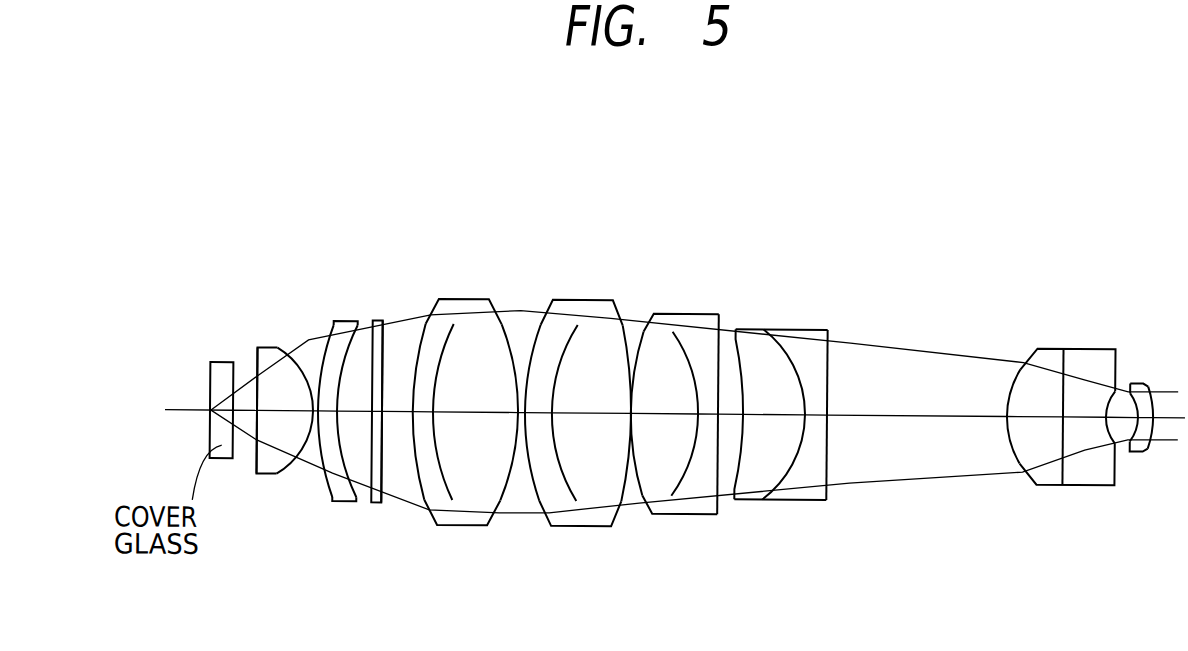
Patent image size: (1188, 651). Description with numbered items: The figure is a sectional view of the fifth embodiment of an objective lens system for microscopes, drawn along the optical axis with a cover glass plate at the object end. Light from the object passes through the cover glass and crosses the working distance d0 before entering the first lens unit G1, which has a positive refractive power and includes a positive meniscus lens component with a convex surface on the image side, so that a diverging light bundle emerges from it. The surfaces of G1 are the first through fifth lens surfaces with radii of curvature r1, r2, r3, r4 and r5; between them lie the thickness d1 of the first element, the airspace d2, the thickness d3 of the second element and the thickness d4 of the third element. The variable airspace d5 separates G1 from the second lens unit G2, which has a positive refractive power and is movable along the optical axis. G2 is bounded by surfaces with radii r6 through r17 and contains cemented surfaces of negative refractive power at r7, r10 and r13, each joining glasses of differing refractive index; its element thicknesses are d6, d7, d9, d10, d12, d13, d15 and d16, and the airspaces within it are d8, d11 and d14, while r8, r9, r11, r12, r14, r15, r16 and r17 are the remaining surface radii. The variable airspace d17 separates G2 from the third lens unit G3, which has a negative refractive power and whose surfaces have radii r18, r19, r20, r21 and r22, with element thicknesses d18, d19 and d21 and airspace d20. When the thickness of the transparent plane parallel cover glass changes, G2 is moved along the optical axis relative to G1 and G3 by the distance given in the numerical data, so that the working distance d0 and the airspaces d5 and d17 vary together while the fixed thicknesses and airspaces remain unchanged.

The first lens unit G1 is at (401, 174).
The second lens unit G2 is at (858, 174).
The third lens unit G3 is at (1180, 173).
The radius of curvature of first lens surface r1 is at (248, 372).
The radius of curvature of second lens surface r2 is at (286, 339).
The radius of curvature of third lens surface r3 is at (316, 319).
The radius of curvature of fourth lens surface r4 is at (355, 319).
The radius of curvature of fifth lens surface r5 is at (390, 318).
The radius of curvature of sixth lens surface r6 is at (422, 320).
The radius of curvature of seventh lens surface r7 is at (455, 320).
The radius of curvature of eighth lens surface r8 is at (503, 320).
The radius of curvature of ninth lens surface r9 is at (535, 320).
The radius of curvature of tenth lens surface r10 is at (573, 320).
The radius of curvature of eleventh lens surface r11 is at (624, 320).
The radius of curvature of twelfth lens surface r12 is at (642, 314).
The radius of curvature of thirteenth lens surface r13 is at (682, 314).
The radius of curvature of fourteenth lens surface r14 is at (722, 313).
The radius of curvature of fifteenth lens surface r15 is at (735, 313).
The radius of curvature of sixteenth lens surface r16 is at (787, 313).
The radius of curvature of seventeenth lens surface r17 is at (845, 312).
The radius of curvature of eighteenth lens surface r18 is at (1013, 355).
The radius of curvature of nineteenth lens surface r19 is at (1058, 343).
The radius of curvature of twentieth lens surface r20 is at (1100, 386).
The radius of curvature of twenty-first lens surface r21 is at (1130, 373).
The radius of curvature of twenty-second lens surface r22 is at (1155, 382).
The working distance d0 is at (246, 415).
The thickness of first lens element d1 is at (268, 415).
The airspace between second and third surfaces d2 is at (307, 415).
The thickness of second lens element d3 is at (335, 415).
The thickness of third lens element d4 is at (368, 415).
The variable airspace between first and second lens units d5 is at (400, 415).
The thickness of fourth lens element d6 is at (425, 415).
The thickness of fifth lens element d7 is at (466, 415).
The airspace between eighth and ninth surfaces d8 is at (522, 415).
The thickness of sixth lens element d9 is at (555, 415).
The thickness of seventh lens element d10 is at (602, 415).
The airspace between eleventh and twelfth surfaces d11 is at (634, 415).
The thickness of eighth lens element d12 is at (663, 415).
The thickness of ninth lens element d13 is at (690, 415).
The airspace between fourteenth and fifteenth surfaces d14 is at (725, 415).
The thickness of tenth lens element d15 is at (755, 415).
The thickness of eleventh lens element d16 is at (797, 415).
The variable airspace between second and third lens units d17 is at (903, 415).
The thickness of twelfth lens element d18 is at (1033, 415).
The thickness of thirteenth lens element d19 is at (1076, 415).
The airspace between twentieth and twenty-first surfaces d20 is at (1120, 415).
The thickness of fourteenth lens element d21 is at (1147, 415).